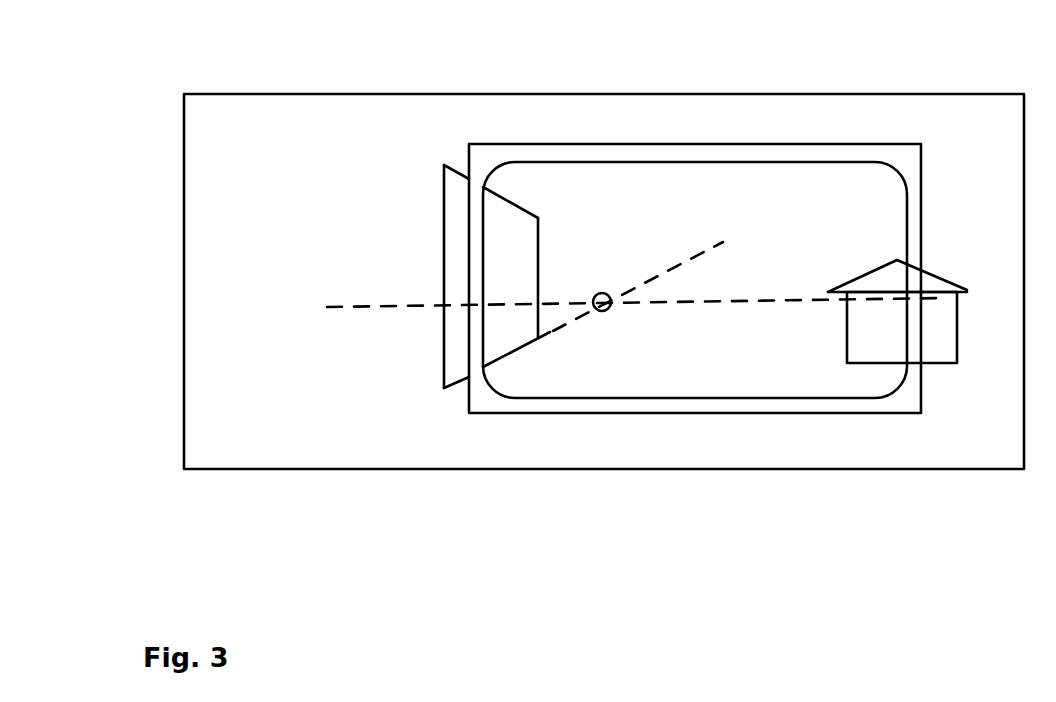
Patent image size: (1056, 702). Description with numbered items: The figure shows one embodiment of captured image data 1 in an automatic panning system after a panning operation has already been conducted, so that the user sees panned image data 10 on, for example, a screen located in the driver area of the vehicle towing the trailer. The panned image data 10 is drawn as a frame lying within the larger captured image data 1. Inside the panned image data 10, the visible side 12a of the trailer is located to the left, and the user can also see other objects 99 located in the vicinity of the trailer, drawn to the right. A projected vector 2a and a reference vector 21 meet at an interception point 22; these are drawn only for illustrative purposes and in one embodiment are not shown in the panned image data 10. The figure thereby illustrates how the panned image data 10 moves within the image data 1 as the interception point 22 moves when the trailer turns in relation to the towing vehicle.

The captured image data 1 is at (185, 437).
The panned image data 10 is at (553, 143).
The visible side 12a is at (455, 227).
The projected vector 2a is at (684, 258).
The interception point 22 is at (599, 293).
The reference vector 21 is at (772, 300).
The other objects 99 is at (932, 272).